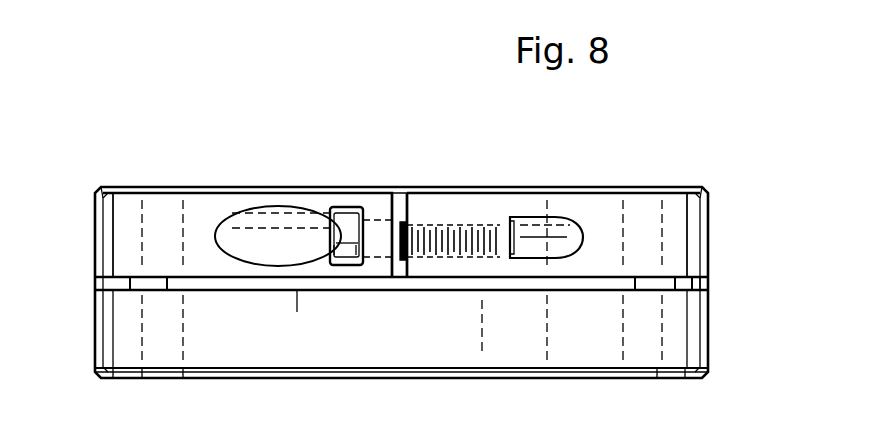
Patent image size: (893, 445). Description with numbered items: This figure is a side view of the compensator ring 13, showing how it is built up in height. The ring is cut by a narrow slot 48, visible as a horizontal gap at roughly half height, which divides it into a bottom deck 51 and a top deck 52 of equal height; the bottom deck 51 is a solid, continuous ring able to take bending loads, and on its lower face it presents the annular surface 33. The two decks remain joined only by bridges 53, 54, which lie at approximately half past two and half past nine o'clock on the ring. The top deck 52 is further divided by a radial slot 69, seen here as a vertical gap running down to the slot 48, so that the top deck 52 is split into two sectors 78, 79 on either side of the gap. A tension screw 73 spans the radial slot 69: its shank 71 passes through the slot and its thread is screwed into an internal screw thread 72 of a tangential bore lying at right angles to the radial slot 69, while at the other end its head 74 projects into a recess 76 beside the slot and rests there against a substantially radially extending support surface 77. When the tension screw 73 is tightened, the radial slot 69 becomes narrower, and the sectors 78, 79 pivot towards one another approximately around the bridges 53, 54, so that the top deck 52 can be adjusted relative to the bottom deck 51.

The compensator ring 13 is at (150, 140).
The annular surface 33 is at (133, 380).
The slot 48 is at (297, 300).
The bottom deck 51 is at (95, 330).
The top deck 52 is at (95, 228).
The bridge 53 is at (700, 286).
The bridge 54 is at (103, 283).
The radial slot 69 is at (399, 192).
The shank 71 is at (405, 222).
The internal screw thread 72 is at (478, 228).
The tension screw 73 is at (332, 250).
The head 74 is at (343, 212).
The recess 76 is at (266, 237).
The support surface 77 is at (354, 250).
The sector 78 is at (216, 202).
The sector 79 is at (587, 205).